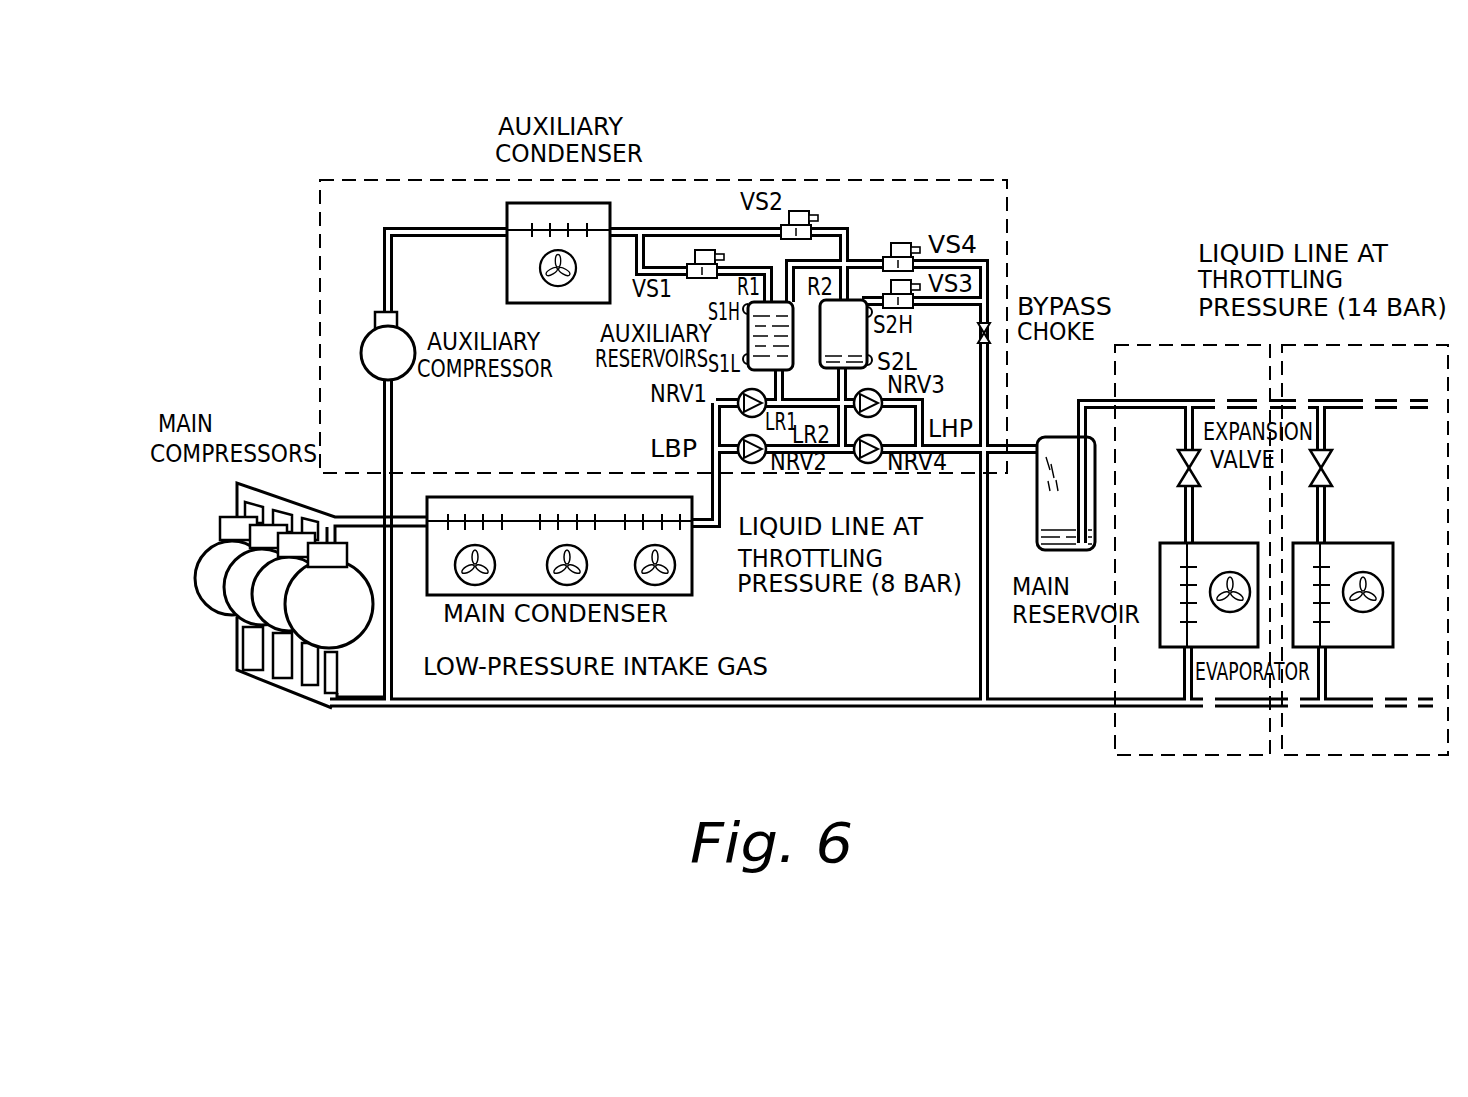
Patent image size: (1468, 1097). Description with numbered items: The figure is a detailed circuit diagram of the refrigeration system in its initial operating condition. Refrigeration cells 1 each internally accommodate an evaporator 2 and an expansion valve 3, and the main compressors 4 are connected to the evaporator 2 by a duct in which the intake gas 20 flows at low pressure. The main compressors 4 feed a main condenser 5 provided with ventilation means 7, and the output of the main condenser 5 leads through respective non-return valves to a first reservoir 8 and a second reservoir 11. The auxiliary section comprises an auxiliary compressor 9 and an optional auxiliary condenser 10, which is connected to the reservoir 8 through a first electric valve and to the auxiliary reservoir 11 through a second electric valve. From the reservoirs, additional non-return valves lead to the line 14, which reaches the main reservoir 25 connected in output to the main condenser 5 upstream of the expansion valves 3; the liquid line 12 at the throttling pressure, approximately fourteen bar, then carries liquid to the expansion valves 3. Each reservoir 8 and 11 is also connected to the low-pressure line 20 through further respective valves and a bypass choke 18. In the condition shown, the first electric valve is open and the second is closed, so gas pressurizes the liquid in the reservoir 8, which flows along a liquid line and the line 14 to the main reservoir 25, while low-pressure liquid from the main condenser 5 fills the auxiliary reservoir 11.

The refrigeration cell 1 is at (1118, 762).
The evaporator 2 is at (1168, 623).
The expansion valve 3 is at (1176, 456).
The main compressor 4 is at (225, 622).
The main condenser 5 is at (510, 493).
The ventilation means 7 is at (567, 547).
The reservoir 8 is at (800, 297).
The auxiliary compressor 9 is at (365, 330).
The auxiliary condenser 10 is at (615, 215).
The auxiliary reservoir 11 is at (875, 342).
The liquid line 12 is at (1137, 400).
The high-pressure line 14 is at (968, 457).
The bypass choke 18 is at (997, 342).
The intake gas 20 is at (698, 708).
The main reservoir 25 is at (1037, 530).